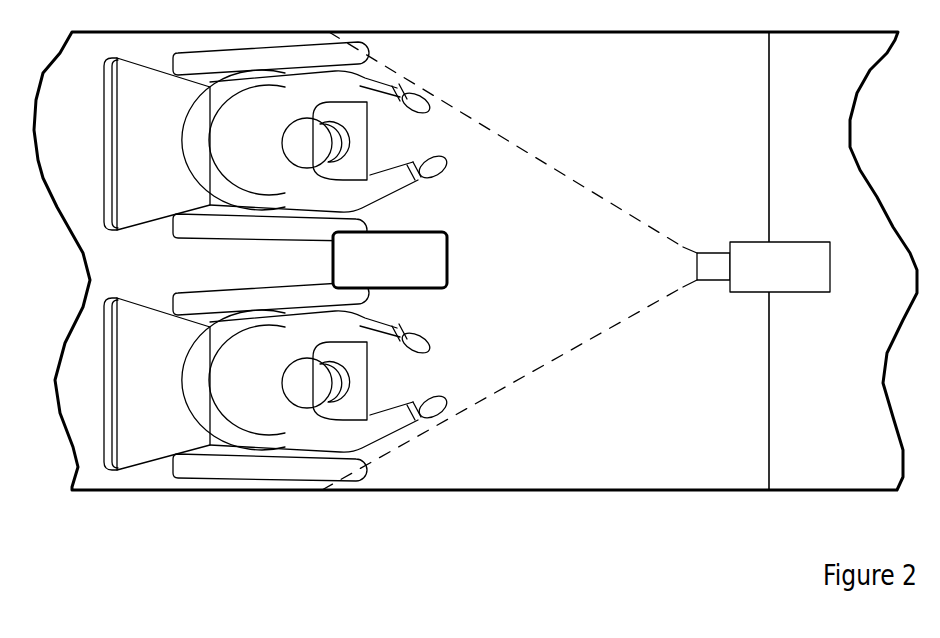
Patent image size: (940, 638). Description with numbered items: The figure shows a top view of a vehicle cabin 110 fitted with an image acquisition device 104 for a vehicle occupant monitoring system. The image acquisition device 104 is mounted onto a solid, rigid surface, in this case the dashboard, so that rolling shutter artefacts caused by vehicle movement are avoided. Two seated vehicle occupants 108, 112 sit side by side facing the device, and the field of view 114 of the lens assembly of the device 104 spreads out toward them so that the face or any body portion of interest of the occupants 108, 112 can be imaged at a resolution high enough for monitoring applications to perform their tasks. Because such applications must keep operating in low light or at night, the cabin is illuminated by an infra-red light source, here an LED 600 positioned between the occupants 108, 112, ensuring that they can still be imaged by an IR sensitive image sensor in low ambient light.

The image acquisition device 104 is at (815, 281).
The vehicle occupant 108 is at (360, 88).
The vehicle cabin 110 is at (739, 478).
The vehicle occupant 112 is at (360, 328).
The field of view 114 is at (530, 370).
The LED 600 is at (398, 244).